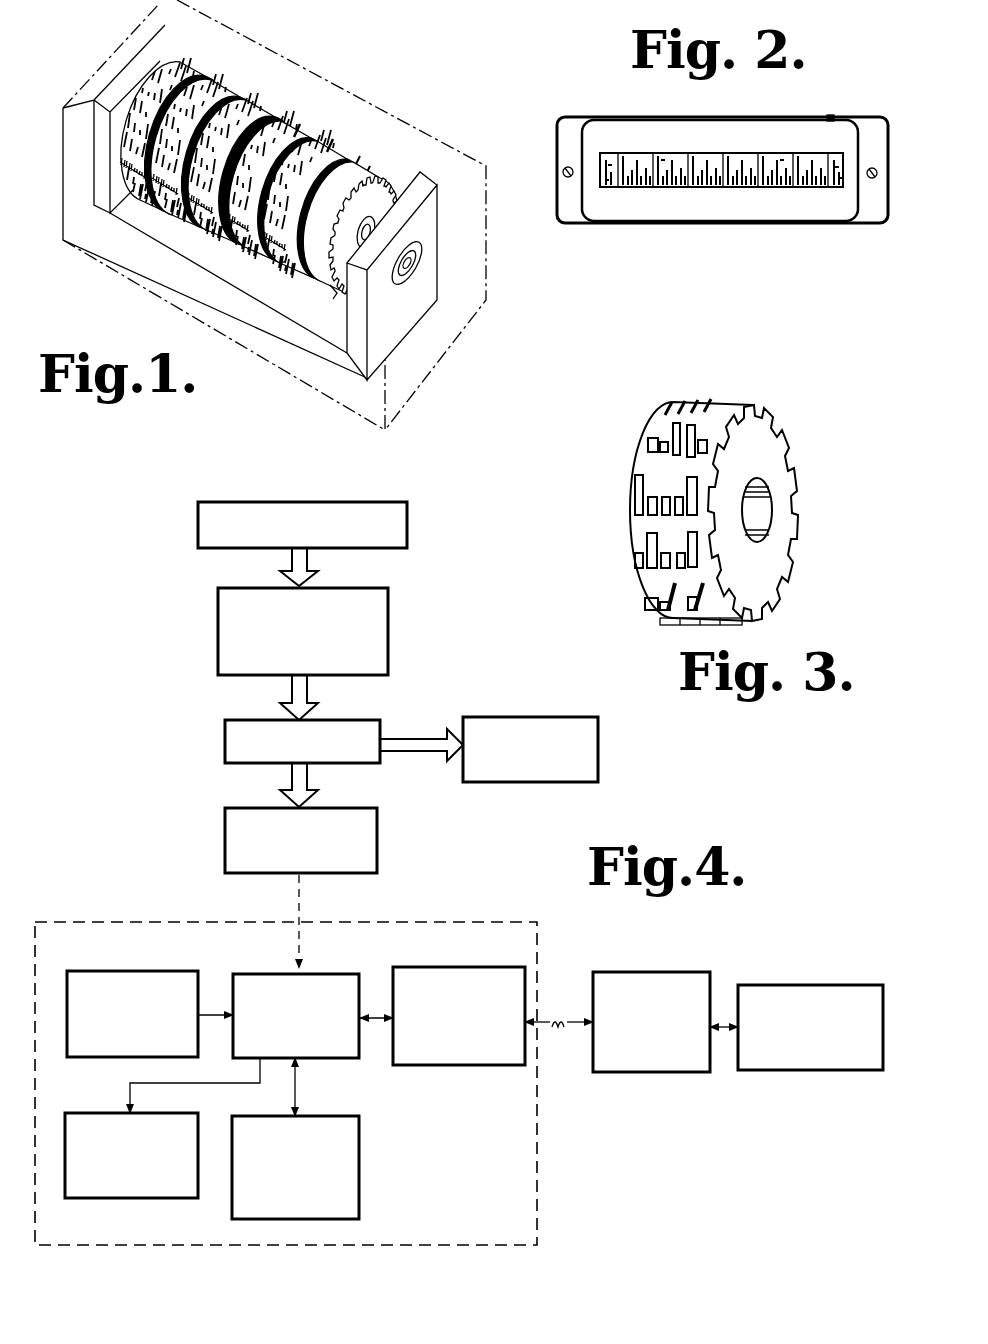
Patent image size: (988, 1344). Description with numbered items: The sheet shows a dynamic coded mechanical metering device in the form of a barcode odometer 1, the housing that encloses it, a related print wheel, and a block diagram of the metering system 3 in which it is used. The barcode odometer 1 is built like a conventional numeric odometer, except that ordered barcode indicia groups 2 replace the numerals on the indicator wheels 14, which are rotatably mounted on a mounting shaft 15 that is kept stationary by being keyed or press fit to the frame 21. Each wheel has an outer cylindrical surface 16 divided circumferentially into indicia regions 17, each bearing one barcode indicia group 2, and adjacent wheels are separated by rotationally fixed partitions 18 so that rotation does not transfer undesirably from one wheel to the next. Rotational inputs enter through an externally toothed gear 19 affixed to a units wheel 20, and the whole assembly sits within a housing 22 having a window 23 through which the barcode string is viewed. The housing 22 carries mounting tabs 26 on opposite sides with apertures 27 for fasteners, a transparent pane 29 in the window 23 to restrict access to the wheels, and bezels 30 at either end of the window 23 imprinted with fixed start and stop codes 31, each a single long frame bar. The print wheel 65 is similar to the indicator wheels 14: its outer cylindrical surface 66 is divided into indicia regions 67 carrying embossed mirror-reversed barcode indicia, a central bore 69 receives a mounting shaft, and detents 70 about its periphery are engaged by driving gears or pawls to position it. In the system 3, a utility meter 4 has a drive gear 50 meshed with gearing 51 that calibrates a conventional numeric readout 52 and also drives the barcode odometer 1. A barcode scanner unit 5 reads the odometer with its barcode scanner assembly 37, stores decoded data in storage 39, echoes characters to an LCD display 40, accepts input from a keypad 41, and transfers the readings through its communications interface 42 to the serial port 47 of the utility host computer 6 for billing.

In FIG. 1, the barcode odometer 1 is at (357, 63).
In FIG. 4, the barcode odometer 1 is at (224, 848).
In FIG. 1, the barcode indicia groups 2 is at (224, 96).
In FIG. 4, the dynamic coded mechanical metering system 3 is at (145, 608).
In FIG. 4, the utility meter 4 is at (198, 502).
In FIG. 4, the barcode scanner unit 5 is at (85, 913).
In FIG. 4, the utility host computer 6 is at (810, 985).
In FIG. 1, the indicator wheels 14 is at (222, 237).
In FIG. 2, the indicator wheels 14 is at (735, 162).
In FIG. 1, the mounting shaft 15 is at (418, 265).
In FIG. 1, the outer cylindrical surface 16 is at (330, 150).
In FIG. 1, the indicia regions 17 is at (367, 173).
In FIG. 1, the partitions 18 is at (150, 190).
In FIG. 1, the gear 19 is at (337, 293).
In FIG. 2, the gear 19 is at (830, 115).
In FIG. 1, the units wheel 20 is at (377, 182).
In FIG. 1, the frame 21 is at (100, 210).
In FIG. 1, the housing 22 is at (410, 410).
In FIG. 2, the housing 22 is at (558, 220).
In FIG. 1, the window 23 is at (297, 140).
In FIG. 2, the window 23 is at (663, 162).
In FIG. 2, the mounting tabs 26 is at (567, 135).
In FIG. 2, the apertures 27 is at (565, 175).
In FIG. 2, the pane 29 is at (782, 163).
In FIG. 2, the bezels 30 is at (607, 180).
In FIG. 2, the start and stop codes 31 is at (610, 167).
In FIG. 4, the barcode scanner assembly 37 is at (360, 976).
In FIG. 4, the storage 39 is at (363, 1118).
In FIG. 4, the LCD display 40 is at (143, 1198).
In FIG. 4, the keypad 41 is at (140, 970).
In FIG. 4, the communications interface 42 is at (493, 1067).
In FIG. 4, the serial port 47 is at (633, 1073).
In FIG. 4, the drive gear 50 is at (388, 590).
In FIG. 4, the gearing 51 is at (381, 721).
In FIG. 4, the numeric readout 52 is at (598, 780).
In FIG. 3, the print wheel 65 is at (711, 512).
In FIG. 3, the outer cylindrical surface 66 is at (643, 504).
In FIG. 3, the indicia regions 67 is at (647, 583).
In FIG. 3, the central bore 69 is at (743, 543).
In FIG. 3, the detents 70 is at (787, 513).